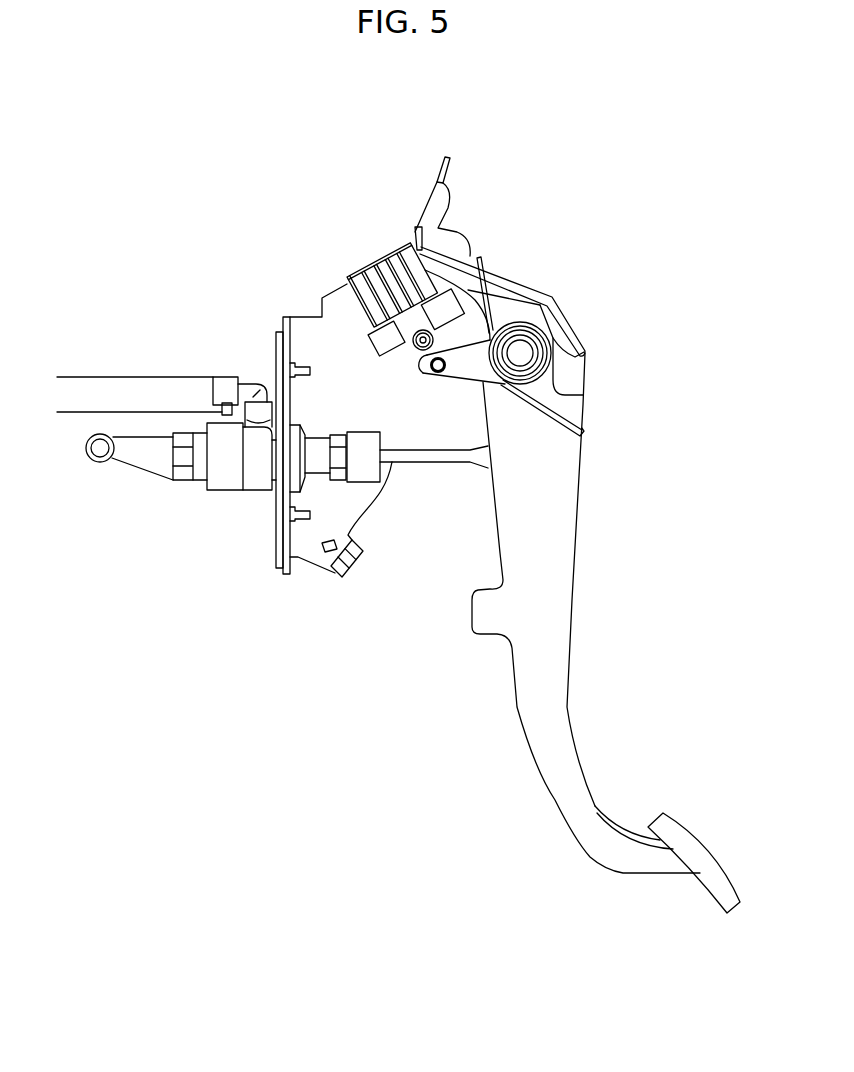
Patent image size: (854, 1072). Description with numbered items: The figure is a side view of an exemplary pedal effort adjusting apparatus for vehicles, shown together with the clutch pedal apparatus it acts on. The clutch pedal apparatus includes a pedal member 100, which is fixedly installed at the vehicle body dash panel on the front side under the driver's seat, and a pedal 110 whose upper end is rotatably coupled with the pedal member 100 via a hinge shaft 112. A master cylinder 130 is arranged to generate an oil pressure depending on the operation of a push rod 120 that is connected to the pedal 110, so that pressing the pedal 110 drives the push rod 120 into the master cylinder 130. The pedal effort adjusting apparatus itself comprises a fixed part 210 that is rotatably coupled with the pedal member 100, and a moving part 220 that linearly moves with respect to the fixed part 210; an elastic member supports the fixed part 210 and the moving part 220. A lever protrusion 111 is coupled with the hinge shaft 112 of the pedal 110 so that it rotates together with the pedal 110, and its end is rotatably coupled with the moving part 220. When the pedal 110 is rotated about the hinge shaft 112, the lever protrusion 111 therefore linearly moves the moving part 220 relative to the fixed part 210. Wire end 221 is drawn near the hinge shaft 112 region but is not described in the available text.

The pedal member 100 is at (318, 322).
The pedal 110 is at (552, 572).
The lever protrusion 111 is at (476, 353).
The hinge shaft 112 is at (522, 353).
The push rod 120 is at (332, 563).
The master cylinder 130 is at (230, 472).
The fixed part 210 is at (380, 275).
The moving part 220 is at (413, 376).
The spring wire end 221 is at (481, 266).